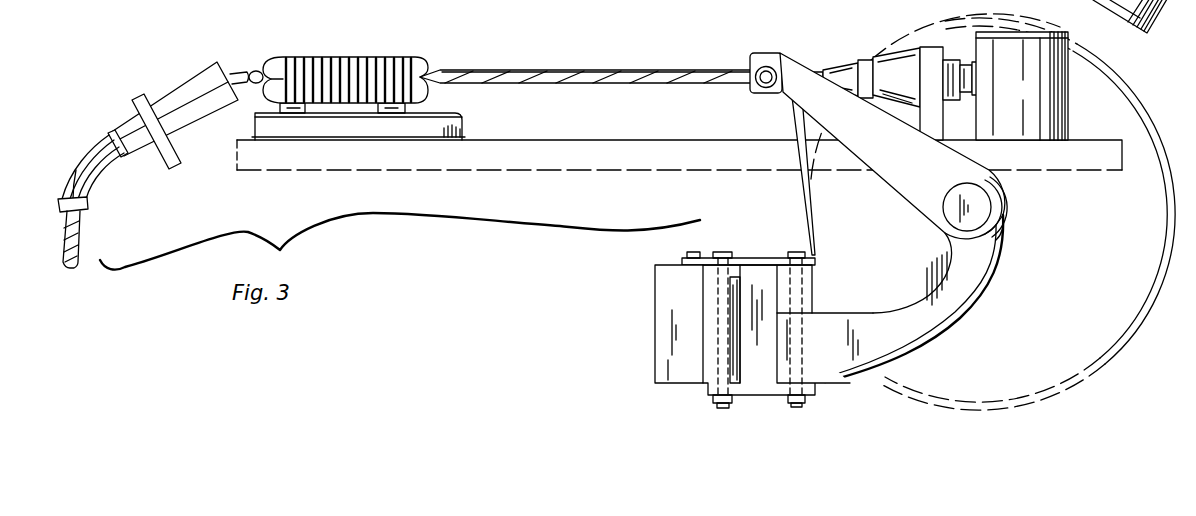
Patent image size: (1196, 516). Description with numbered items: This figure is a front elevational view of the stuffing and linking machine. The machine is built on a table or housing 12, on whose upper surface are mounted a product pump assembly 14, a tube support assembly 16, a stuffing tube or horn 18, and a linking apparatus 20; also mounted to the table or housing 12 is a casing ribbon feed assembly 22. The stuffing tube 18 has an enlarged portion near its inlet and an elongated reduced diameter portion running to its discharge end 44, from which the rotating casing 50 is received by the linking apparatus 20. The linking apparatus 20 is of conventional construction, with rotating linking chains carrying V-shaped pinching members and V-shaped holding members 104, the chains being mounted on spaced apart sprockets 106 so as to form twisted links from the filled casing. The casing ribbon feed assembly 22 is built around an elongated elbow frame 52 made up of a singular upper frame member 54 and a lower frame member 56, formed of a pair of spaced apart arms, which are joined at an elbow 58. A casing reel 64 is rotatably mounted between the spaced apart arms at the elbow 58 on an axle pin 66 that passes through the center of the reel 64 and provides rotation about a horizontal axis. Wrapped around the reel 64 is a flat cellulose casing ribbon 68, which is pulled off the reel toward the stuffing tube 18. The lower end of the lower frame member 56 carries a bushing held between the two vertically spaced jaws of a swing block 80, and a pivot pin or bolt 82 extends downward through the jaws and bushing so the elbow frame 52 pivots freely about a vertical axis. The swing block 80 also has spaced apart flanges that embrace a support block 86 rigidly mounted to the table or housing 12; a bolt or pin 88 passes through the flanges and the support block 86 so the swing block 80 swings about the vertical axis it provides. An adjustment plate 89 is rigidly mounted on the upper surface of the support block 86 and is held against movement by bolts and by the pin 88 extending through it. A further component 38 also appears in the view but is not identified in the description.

The table or housing 12 is at (662, 263).
The product pump assembly 14 is at (1070, 72).
The tube support assembly 16 is at (873, 58).
The stuffing tube or horn 18 is at (813, 72).
The linking apparatus 20 is at (404, 44).
The casing ribbon feed assembly 22 is at (983, 310).
The spool 38 is at (990, 89).
The discharge end 44 is at (430, 66).
The rotating casing 50 is at (528, 70).
The elongated elbow frame 52 is at (970, 323).
The upper frame member 54 is at (897, 183).
The lower frame member 56 is at (910, 352).
The elbow 58 is at (987, 235).
The casing reel 64 is at (1133, 88).
The axle pin 66 is at (990, 200).
The casing ribbon 68 is at (800, 185).
The swing block 80 is at (757, 373).
The pivot pin or bolt 82 is at (797, 407).
The support block 86 is at (668, 347).
The bolt or pin 88 is at (727, 410).
The adjustment plate 89 is at (753, 260).
The V-shaped holding members 104 is at (417, 97).
The sprockets 106 is at (392, 110).